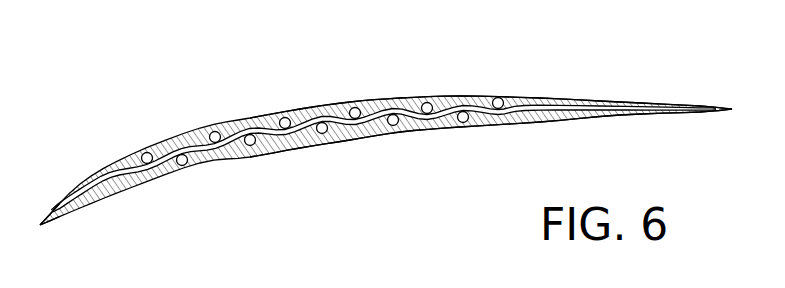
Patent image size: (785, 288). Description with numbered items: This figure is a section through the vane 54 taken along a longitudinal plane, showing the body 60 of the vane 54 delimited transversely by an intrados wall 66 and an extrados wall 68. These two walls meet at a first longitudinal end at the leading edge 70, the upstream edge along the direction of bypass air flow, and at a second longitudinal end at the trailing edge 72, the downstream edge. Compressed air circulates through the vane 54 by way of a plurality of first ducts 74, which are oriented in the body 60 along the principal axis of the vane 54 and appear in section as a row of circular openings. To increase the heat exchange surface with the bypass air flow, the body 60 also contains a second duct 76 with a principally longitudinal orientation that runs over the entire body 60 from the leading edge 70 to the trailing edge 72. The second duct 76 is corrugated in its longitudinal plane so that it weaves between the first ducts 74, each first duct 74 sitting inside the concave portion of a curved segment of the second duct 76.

The vane 54 is at (252, 104).
The body 60 is at (378, 92).
The intrados wall 66 is at (573, 124).
The extrados wall 68 is at (575, 96).
The leading edge 70 is at (38, 226).
The trailing edge 72 is at (735, 110).
The ducts 74 is at (500, 98).
The other ducts 76 is at (462, 104).